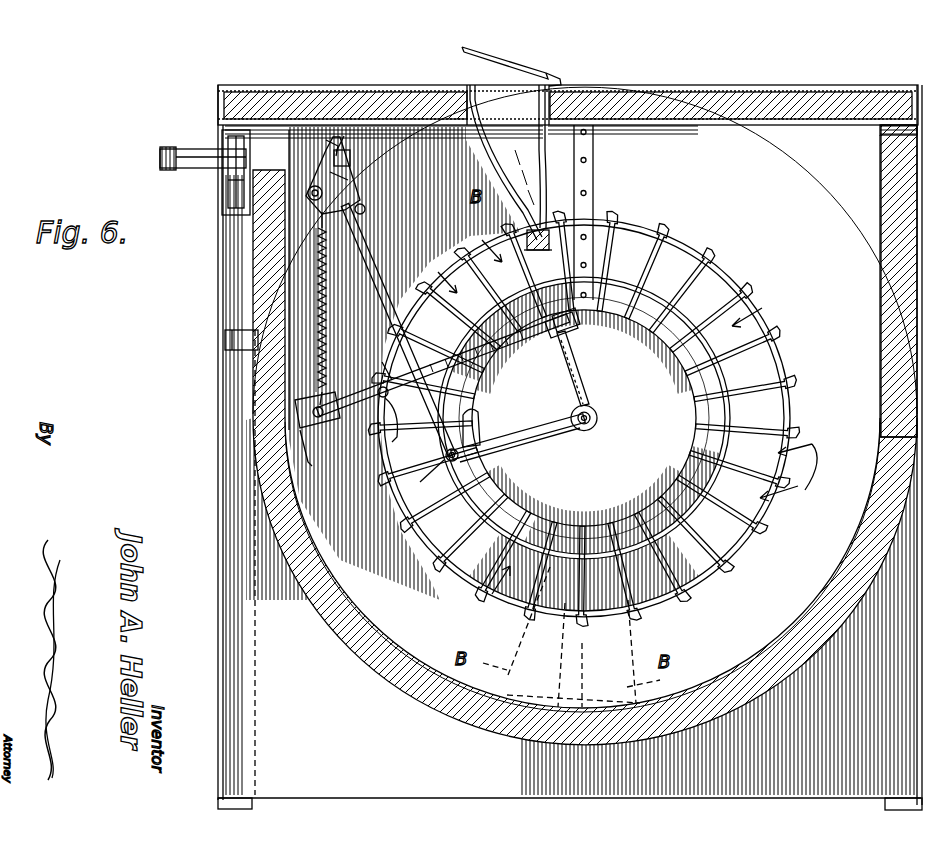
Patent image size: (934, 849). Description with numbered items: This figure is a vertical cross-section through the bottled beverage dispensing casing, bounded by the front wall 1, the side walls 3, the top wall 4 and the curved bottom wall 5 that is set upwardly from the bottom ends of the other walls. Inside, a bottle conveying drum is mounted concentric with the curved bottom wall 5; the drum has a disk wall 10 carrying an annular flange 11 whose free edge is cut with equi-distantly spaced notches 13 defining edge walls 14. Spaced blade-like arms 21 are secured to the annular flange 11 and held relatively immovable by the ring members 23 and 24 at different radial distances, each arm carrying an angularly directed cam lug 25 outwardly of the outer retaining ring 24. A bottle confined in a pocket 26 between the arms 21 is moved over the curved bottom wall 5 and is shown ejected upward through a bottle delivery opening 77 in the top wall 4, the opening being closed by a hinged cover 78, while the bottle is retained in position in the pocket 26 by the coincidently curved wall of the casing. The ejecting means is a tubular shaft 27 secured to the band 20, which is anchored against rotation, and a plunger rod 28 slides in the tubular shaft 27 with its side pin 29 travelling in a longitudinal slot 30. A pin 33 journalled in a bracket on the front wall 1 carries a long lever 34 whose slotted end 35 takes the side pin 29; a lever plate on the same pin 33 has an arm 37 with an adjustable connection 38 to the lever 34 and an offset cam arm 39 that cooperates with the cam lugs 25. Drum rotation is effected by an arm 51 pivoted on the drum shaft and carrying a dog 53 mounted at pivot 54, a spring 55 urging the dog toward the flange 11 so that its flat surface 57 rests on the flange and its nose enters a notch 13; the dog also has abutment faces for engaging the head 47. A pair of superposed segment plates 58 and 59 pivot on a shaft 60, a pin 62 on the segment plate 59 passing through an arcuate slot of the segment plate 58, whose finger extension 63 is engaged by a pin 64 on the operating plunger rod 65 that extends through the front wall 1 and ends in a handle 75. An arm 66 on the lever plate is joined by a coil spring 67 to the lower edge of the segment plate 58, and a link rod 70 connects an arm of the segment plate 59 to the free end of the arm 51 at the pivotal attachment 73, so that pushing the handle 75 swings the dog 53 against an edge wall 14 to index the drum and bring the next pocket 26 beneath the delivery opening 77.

The front wall 1 is at (218, 389).
The side walls 3 is at (345, 785).
The top wall 4 is at (732, 102).
The curved bottom wall 5 is at (712, 692).
The disk wall 10 is at (640, 337).
The annular flange 11 is at (584, 417).
The notches 13 is at (575, 404).
The edge walls 14 is at (594, 528).
The band 20 is at (596, 443).
The blade-like arms 21 is at (584, 418).
The ring member 23 is at (596, 418).
The outer retaining ring 24 is at (601, 418).
The cam lug 25 is at (584, 417).
The pocket 26 is at (620, 417).
The tubular shaft 27 is at (586, 398).
The plunger rod 28 is at (528, 262).
The side pin 29 is at (575, 322).
The longitudinal slot 30 is at (576, 380).
The pin 33 is at (320, 425).
The lever 34 is at (440, 368).
The slot 35 is at (560, 336).
The arm 37 is at (398, 420).
The adjustable connection 38 is at (388, 396).
The offset cam arm 39 is at (382, 362).
The head 47 is at (505, 423).
The arm 51 is at (545, 436).
The dog 53 is at (475, 414).
The pivot 54 is at (462, 458).
The spring 55 is at (310, 462).
The flat surface 57 is at (226, 338).
The segment plate 58 is at (335, 150).
The segment plate 59 is at (348, 180).
The shaft 60 is at (312, 200).
The pin 62 is at (364, 206).
The finger extension 63 is at (340, 148).
The pin 64 is at (352, 165).
The operating plunger rod 65 is at (206, 150).
The arm 66 is at (316, 300).
The coil spring 67 is at (327, 300).
The link rod 70 is at (386, 290).
The pivotal attachment 73 is at (447, 462).
The handle 75 is at (166, 160).
The bottle delivery openings 77 is at (551, 94).
The hinged covers 78 is at (520, 62).